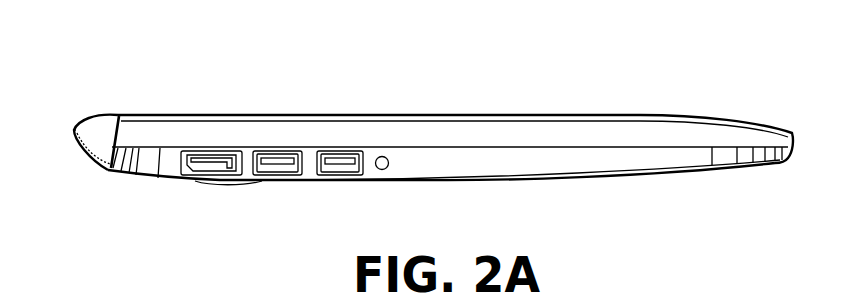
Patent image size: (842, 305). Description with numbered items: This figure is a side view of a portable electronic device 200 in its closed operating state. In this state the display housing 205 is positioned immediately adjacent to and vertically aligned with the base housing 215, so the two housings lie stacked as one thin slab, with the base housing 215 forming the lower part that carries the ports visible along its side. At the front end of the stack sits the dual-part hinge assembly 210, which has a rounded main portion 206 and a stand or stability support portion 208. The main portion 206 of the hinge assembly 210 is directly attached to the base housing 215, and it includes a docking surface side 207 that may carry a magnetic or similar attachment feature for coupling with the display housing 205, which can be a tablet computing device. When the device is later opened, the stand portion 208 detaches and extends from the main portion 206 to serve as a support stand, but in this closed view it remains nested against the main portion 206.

The portable electronic device 200 is at (573, 44).
The display housing 205 is at (263, 122).
The main portion 206 is at (93, 121).
The docking surface side 207 is at (113, 121).
The stand portion 208 is at (101, 157).
The hinge assembly 210 is at (63, 130).
The base housing 215 is at (450, 172).